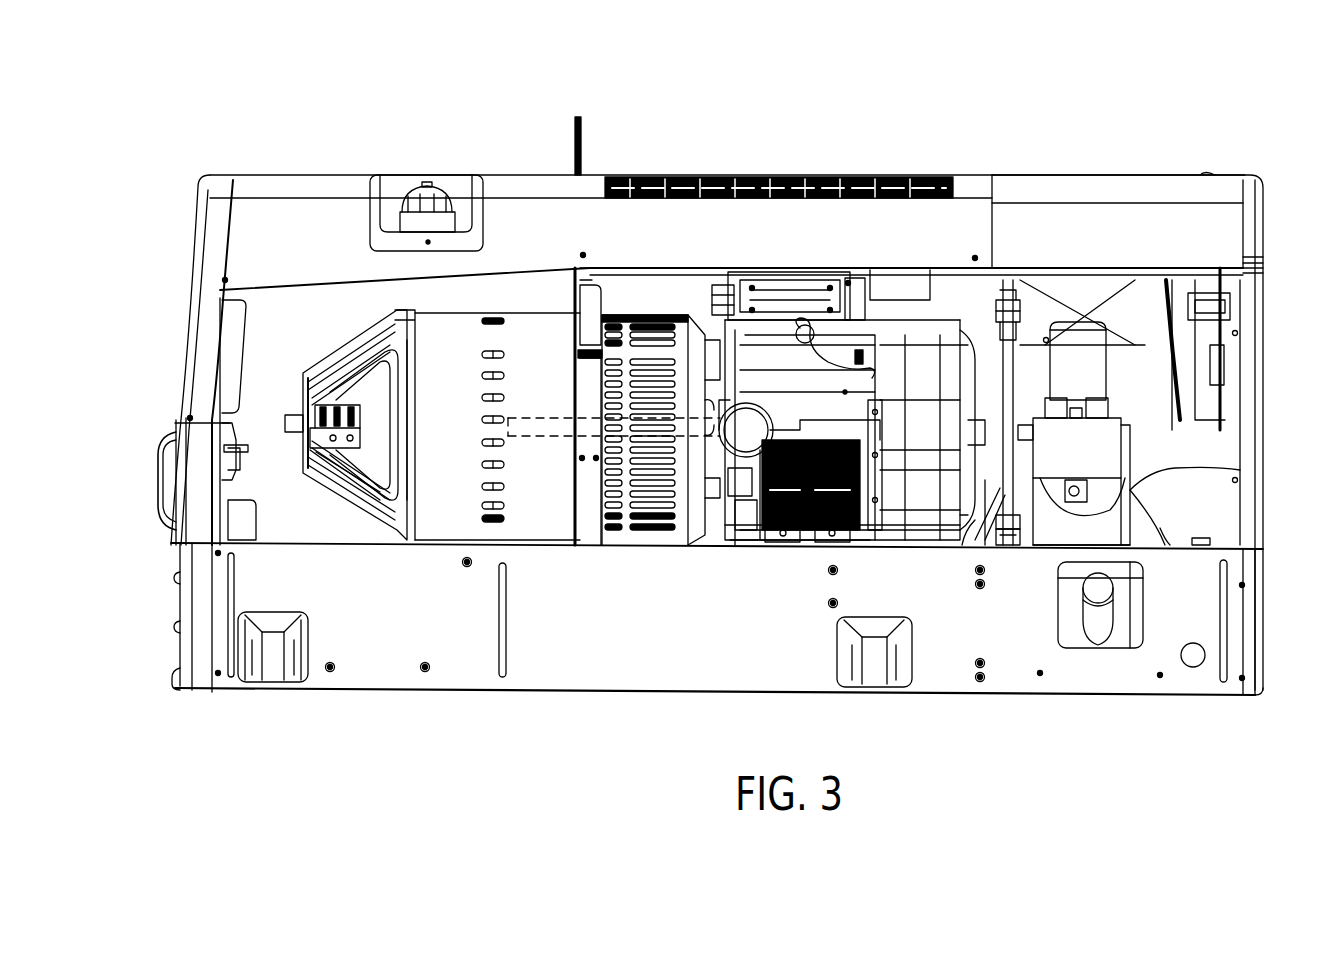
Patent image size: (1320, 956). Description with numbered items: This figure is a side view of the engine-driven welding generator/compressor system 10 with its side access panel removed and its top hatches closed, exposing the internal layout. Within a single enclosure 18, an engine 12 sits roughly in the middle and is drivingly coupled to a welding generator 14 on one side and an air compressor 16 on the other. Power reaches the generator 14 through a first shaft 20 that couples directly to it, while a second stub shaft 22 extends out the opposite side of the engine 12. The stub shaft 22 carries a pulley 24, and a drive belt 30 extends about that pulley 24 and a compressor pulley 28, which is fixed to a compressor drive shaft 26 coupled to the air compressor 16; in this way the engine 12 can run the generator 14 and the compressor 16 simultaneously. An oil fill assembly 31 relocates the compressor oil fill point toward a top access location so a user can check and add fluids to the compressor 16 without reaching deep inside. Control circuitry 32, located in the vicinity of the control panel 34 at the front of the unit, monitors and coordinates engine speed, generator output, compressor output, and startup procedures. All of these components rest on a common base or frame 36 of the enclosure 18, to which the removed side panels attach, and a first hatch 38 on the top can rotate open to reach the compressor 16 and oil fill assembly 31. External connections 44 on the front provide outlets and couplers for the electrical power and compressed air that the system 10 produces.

The engine-driven welding generator/compressor system 10 is at (1124, 125).
The engine 12 is at (903, 300).
The welding generator 14 is at (535, 330).
The air compressor 16 is at (1145, 490).
The enclosure 18 is at (345, 150).
The first shaft 20 is at (541, 436).
The second shaft 22 is at (1030, 435).
The pulley 24 is at (1015, 410).
The compressor drive shaft 26 is at (1015, 545).
The compressor pulley 28 is at (985, 500).
The drive belt 30 is at (990, 490).
The oil fill assembly 31 is at (1016, 318).
The control circuitry 32 is at (250, 320).
The control panel 34 is at (196, 222).
The frame 36 is at (361, 547).
The first hatch 38 is at (1044, 177).
The external connections 44 is at (152, 470).